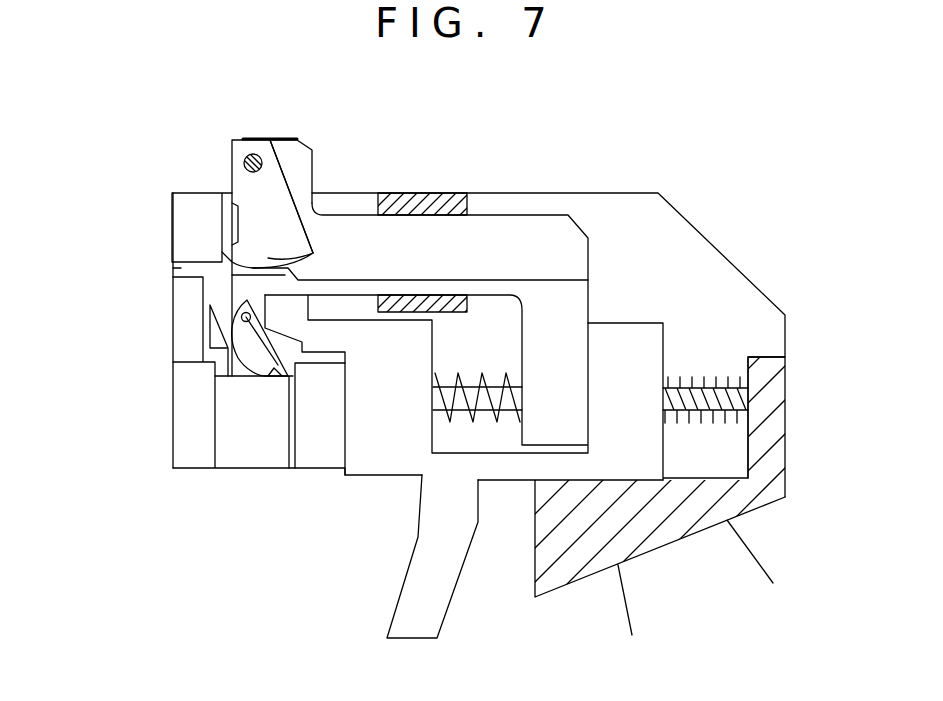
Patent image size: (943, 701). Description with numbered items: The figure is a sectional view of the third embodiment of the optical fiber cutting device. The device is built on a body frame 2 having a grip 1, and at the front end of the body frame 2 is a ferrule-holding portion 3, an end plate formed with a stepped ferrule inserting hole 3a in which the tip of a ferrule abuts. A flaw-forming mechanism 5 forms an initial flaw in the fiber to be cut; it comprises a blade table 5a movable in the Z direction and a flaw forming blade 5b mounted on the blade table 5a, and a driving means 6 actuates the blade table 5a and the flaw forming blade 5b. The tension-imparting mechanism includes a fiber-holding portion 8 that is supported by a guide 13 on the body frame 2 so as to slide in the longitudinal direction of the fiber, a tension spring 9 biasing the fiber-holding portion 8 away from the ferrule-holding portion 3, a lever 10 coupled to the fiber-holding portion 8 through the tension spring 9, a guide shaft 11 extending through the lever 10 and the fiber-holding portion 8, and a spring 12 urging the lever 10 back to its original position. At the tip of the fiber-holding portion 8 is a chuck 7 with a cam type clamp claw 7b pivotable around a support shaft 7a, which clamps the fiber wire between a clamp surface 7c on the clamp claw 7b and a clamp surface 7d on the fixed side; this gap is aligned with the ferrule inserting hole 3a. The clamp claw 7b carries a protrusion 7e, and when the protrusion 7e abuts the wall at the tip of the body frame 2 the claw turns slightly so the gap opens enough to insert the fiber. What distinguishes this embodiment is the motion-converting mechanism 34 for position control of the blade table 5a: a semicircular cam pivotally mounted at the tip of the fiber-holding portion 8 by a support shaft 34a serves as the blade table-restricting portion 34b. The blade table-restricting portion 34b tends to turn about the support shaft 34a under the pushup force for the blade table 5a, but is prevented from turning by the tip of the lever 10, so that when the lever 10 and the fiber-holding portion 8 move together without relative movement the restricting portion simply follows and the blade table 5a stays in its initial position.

The grip 1 is at (645, 603).
The body frame 2 is at (678, 233).
The ferrule-holding portion 3 is at (161, 274).
The ferrule inserting hole 3a is at (173, 268).
The flaw-forming mechanism 5 is at (203, 456).
The blade table 5a is at (225, 420).
The flaw forming blade 5b is at (215, 347).
The driving means 6 is at (256, 547).
The chuck 7 is at (252, 122).
The support shaft 7a is at (248, 158).
The clamp claw 7b is at (245, 187).
The clamp surface 7c is at (313, 253).
The clamp surface 7d is at (300, 268).
The protrusion 7e is at (220, 250).
The fiber-holding portion 8 is at (555, 238).
The tension spring 9 is at (458, 378).
The lever 10 is at (420, 578).
The guide shaft 11 is at (743, 398).
The spring 12 is at (673, 382).
The guide 13 is at (425, 203).
The motion-converting mechanism 34 is at (254, 392).
The support shaft 34a is at (267, 380).
The blade table-restricting portion 34b is at (293, 382).